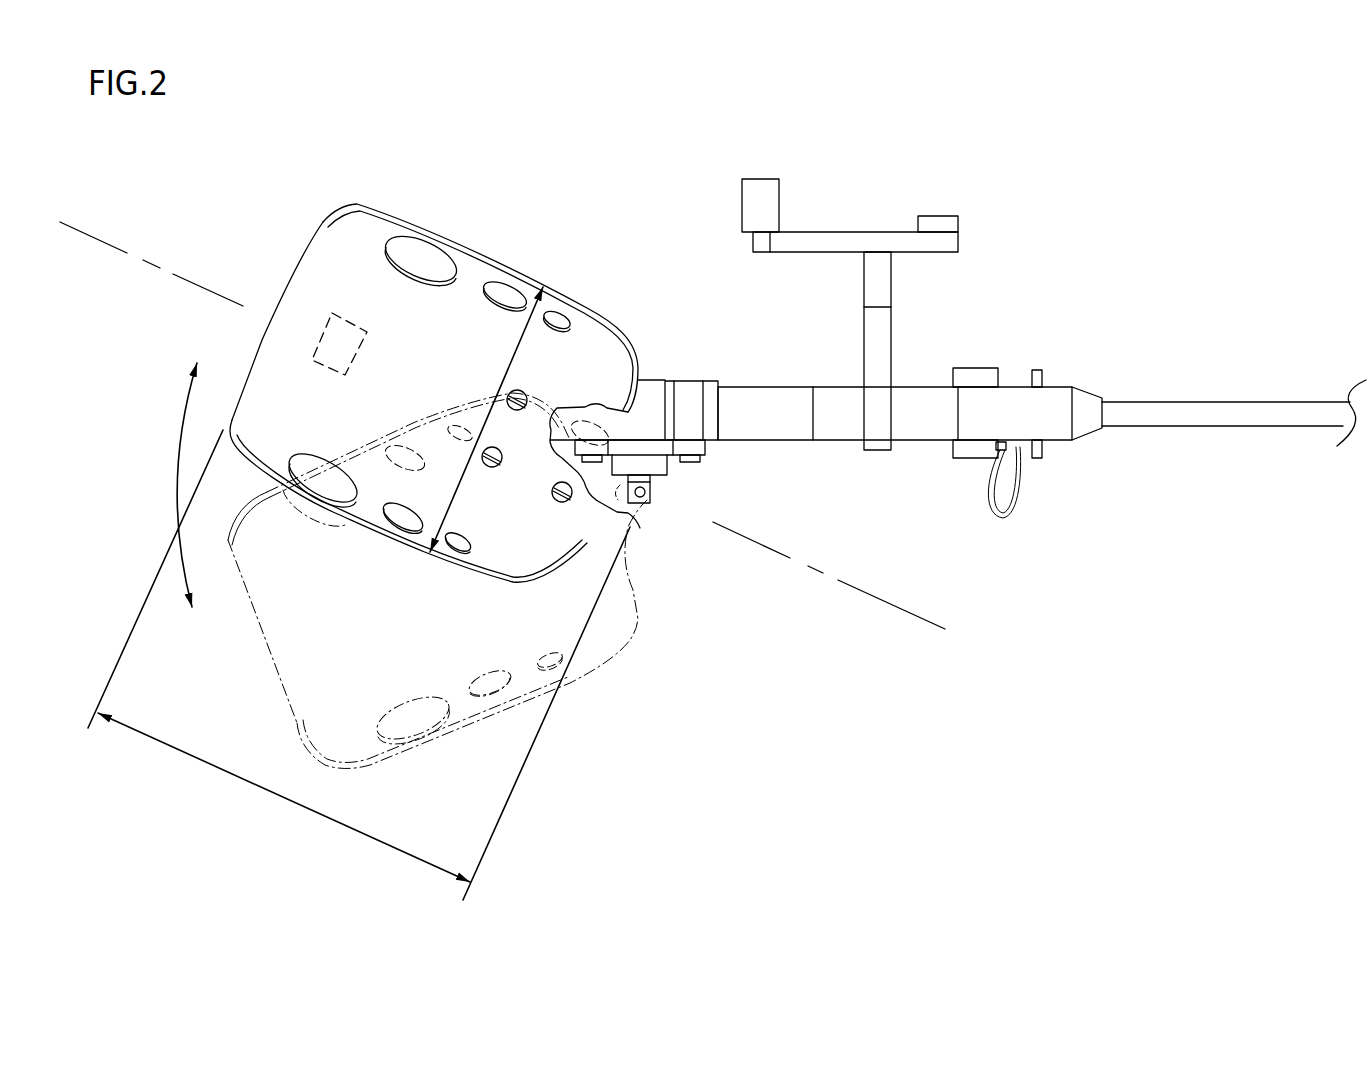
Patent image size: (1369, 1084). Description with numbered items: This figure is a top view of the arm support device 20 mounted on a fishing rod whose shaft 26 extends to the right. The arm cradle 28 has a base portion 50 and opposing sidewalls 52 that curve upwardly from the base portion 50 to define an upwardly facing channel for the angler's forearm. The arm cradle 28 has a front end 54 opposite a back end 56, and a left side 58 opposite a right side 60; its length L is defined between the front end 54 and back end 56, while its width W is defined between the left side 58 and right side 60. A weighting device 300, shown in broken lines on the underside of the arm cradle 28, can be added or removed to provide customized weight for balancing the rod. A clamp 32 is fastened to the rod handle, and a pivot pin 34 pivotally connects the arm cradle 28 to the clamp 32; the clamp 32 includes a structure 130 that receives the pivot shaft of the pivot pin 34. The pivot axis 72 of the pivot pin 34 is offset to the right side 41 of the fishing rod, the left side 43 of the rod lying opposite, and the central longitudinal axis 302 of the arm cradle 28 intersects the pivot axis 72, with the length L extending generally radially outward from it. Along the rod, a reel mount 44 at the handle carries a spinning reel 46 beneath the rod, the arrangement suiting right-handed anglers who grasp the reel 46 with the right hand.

The arm support device 20 is at (587, 242).
The shaft 26 is at (1222, 400).
The arm cradle 28 is at (333, 204).
The clamp 32 is at (685, 380).
The pivot pin 34 is at (645, 492).
The right side 41 is at (1132, 427).
The left side 43 is at (1125, 400).
The reel mount 44 is at (836, 432).
The spinning reel 46 is at (975, 372).
The base portion 50 is at (285, 353).
The sidewalls 52 is at (368, 227).
The front end 54 is at (632, 523).
The back end 56 is at (245, 375).
The left side 58 is at (462, 237).
The right side 60 is at (377, 548).
The pivot axis 72 is at (647, 498).
The structure for receiving the pivot shaft 130 is at (650, 486).
The weighting devices 300 is at (330, 337).
The central longitudinal axis 302 is at (878, 598).